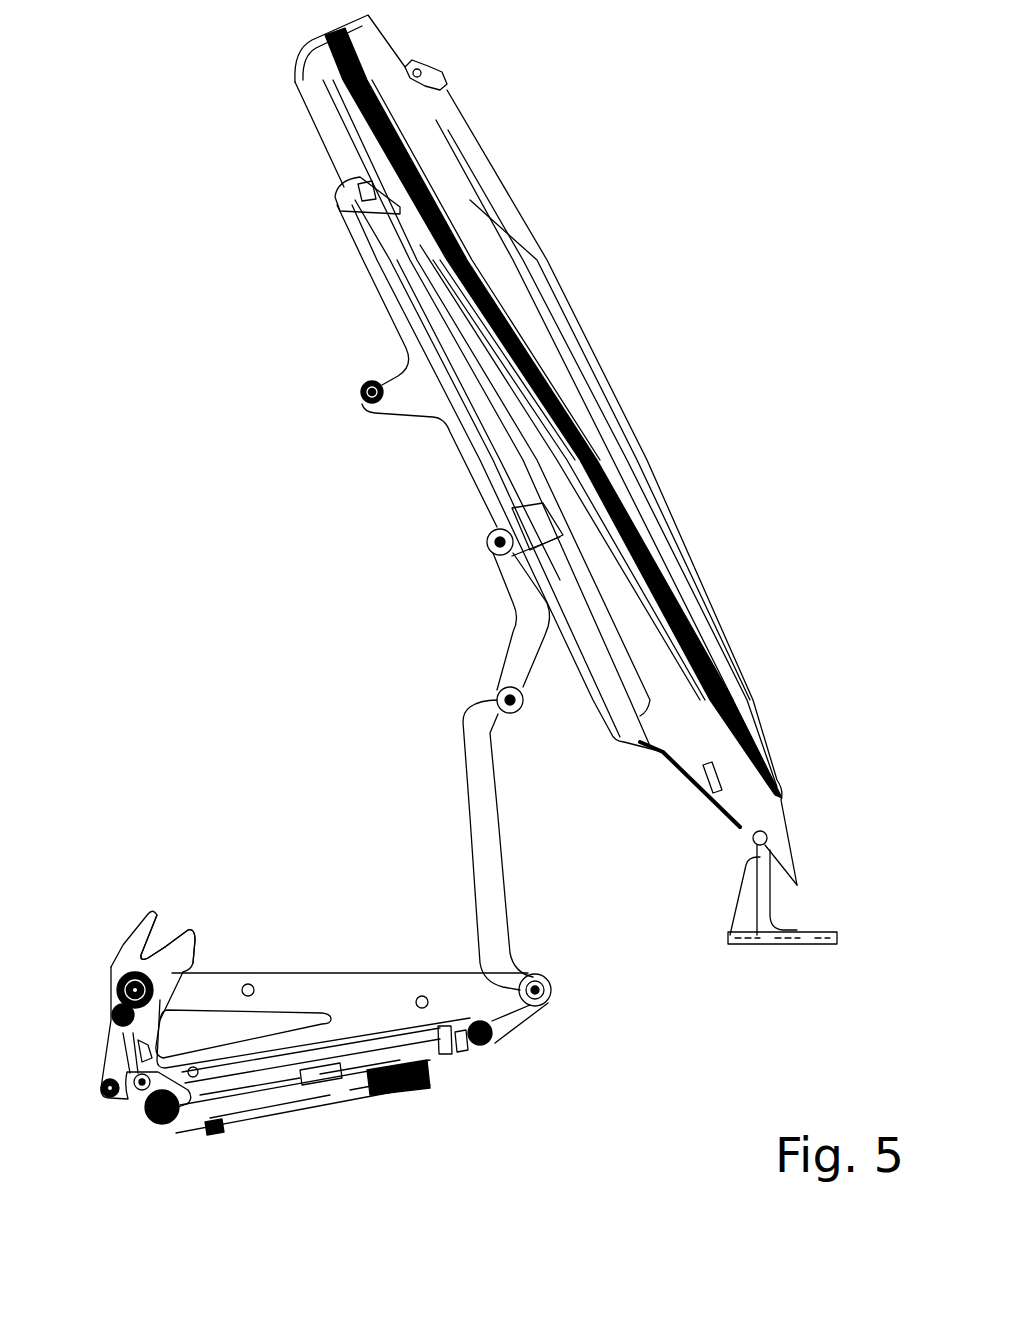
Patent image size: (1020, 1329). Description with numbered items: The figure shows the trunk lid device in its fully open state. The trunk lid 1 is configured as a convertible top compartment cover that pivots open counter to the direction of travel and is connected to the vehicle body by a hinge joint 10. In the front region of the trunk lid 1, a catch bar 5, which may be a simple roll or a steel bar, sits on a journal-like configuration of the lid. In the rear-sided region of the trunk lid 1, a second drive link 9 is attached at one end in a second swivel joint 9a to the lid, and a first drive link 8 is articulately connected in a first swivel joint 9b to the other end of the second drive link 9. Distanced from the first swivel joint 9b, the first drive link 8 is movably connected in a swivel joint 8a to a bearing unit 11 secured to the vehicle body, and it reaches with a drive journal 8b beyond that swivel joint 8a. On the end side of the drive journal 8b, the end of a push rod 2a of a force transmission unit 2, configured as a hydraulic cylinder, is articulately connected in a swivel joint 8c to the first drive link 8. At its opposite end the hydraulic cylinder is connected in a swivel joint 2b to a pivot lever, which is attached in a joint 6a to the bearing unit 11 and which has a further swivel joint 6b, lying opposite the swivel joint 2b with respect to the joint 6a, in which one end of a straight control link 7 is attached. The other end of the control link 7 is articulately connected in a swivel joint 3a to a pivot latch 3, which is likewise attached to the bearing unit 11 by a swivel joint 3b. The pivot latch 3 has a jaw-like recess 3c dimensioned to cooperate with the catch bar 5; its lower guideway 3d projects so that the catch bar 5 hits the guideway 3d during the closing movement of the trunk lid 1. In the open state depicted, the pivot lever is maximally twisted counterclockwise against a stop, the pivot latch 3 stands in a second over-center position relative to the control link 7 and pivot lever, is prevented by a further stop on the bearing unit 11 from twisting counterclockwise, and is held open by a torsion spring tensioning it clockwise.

The trunk lid 1 is at (543, 250).
The force transmission unit 2 is at (263, 1090).
The push rod 2a is at (463, 1043).
The swivel joint 2b is at (158, 1124).
The pivot latch 3 is at (142, 930).
The swivel joint 3a is at (118, 1019).
The swivel joint 3b is at (120, 977).
The jaw-like recess 3c is at (163, 937).
The lower guideway 3d is at (193, 930).
The catch bar 5 is at (362, 388).
The joint 6a is at (140, 1091).
The swivel joint 6b is at (105, 1098).
The control link 7 is at (110, 1062).
The first drive link 8 is at (485, 813).
The swivel joint 8a is at (548, 978).
The drive journal 8b is at (507, 1023).
The swivel joint 8c is at (490, 1045).
The second drive link 9 is at (525, 623).
The second swivel joint 9a is at (487, 541).
The first swivel joint 9b is at (497, 697).
The hinge joint 10 is at (773, 933).
The bearing unit 11 is at (283, 987).